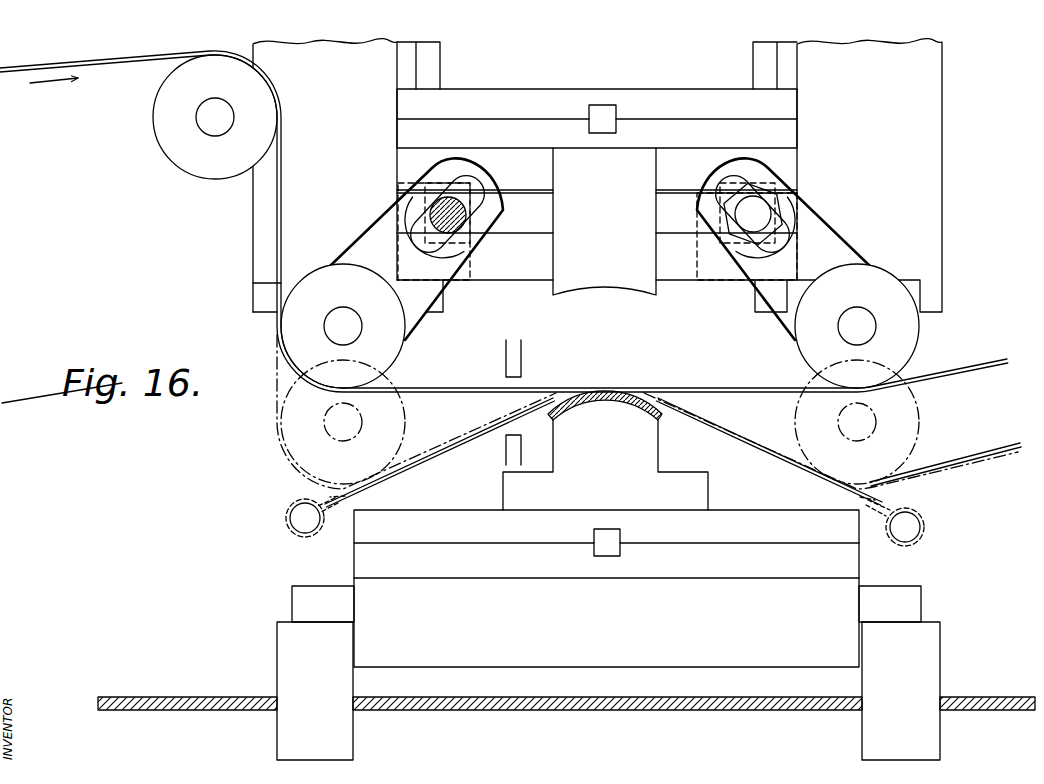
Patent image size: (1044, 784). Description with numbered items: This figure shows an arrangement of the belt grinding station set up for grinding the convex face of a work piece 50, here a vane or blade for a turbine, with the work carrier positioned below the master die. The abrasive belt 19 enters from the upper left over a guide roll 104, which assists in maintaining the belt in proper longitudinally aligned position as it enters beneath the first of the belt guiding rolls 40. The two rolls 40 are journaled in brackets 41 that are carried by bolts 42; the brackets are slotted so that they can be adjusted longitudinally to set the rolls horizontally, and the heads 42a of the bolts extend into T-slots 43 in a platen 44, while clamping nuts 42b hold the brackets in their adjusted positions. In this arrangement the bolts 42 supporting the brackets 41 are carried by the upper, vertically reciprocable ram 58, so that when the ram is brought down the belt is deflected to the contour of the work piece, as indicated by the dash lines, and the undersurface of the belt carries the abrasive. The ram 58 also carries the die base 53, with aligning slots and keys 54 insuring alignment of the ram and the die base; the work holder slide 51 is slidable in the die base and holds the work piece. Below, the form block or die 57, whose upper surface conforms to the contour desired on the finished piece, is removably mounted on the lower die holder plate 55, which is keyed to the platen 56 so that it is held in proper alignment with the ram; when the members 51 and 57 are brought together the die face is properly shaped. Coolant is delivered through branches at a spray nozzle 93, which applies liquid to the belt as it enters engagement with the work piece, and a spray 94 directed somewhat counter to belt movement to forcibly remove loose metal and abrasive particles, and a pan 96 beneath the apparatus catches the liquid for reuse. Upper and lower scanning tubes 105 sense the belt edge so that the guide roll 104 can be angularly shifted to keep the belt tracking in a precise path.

The abrasive belt 19 is at (112, 46).
The guide roll 104 is at (153, 138).
The belt guiding rolls 40 is at (288, 329).
The bracket 41 is at (363, 236).
The bolt 42 is at (440, 210).
The bolt head 42a is at (470, 200).
The clamping nut 42b is at (758, 184).
The T-slot 43 is at (670, 210).
The platen 44 is at (403, 170).
The work piece 50 is at (618, 396).
The work holder slide 51 is at (604, 246).
The die base 53 is at (460, 126).
The aligning slots and keys 54 is at (600, 106).
The lower die holder plate 55 is at (410, 524).
The platen 56 is at (463, 545).
The form block or die 57 is at (637, 448).
The ram 58 is at (522, 94).
The spray nozzle 93 is at (313, 500).
The spray 94 is at (897, 508).
The pan 96 is at (207, 697).
The scanning tubes 105 is at (518, 353).